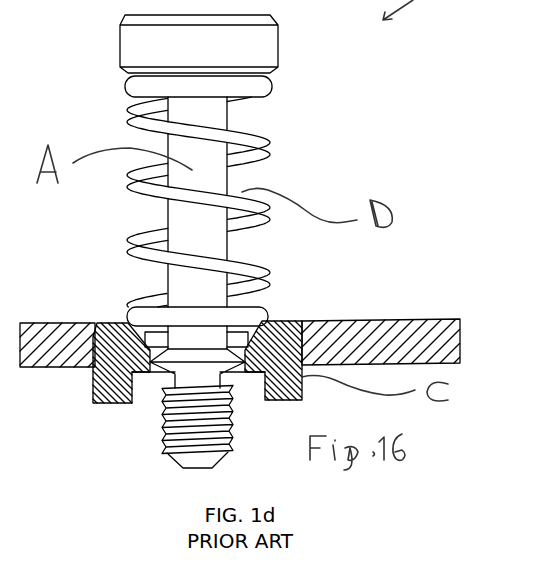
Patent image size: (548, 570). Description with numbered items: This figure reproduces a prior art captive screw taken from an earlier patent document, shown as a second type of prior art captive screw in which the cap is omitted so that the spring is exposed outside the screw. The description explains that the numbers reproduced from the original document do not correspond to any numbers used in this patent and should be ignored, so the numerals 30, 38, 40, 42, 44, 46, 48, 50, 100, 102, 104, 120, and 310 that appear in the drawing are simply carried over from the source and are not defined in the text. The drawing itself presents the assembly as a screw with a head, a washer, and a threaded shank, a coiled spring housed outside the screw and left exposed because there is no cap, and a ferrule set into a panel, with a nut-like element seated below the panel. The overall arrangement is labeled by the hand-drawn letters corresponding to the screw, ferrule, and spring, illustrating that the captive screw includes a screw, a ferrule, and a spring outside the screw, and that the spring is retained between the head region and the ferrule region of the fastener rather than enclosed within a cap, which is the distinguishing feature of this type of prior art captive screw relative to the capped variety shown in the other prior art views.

The washer 30 is at (113, 323).
The grommet flange 38 is at (309, 347).
The fastener 40 is at (186, 56).
The head 42 is at (264, 44).
The spring 44 is at (227, 202).
The threaded shank 46 is at (168, 433).
The nut 48 is at (170, 367).
The spring coil 50 is at (263, 151).
The panel 100 is at (402, 327).
The threads 102 is at (188, 428).
The grommet 104 is at (103, 335).
The grommet lower portion 120 is at (310, 389).
The fastener assembly 310 is at (234, 242).